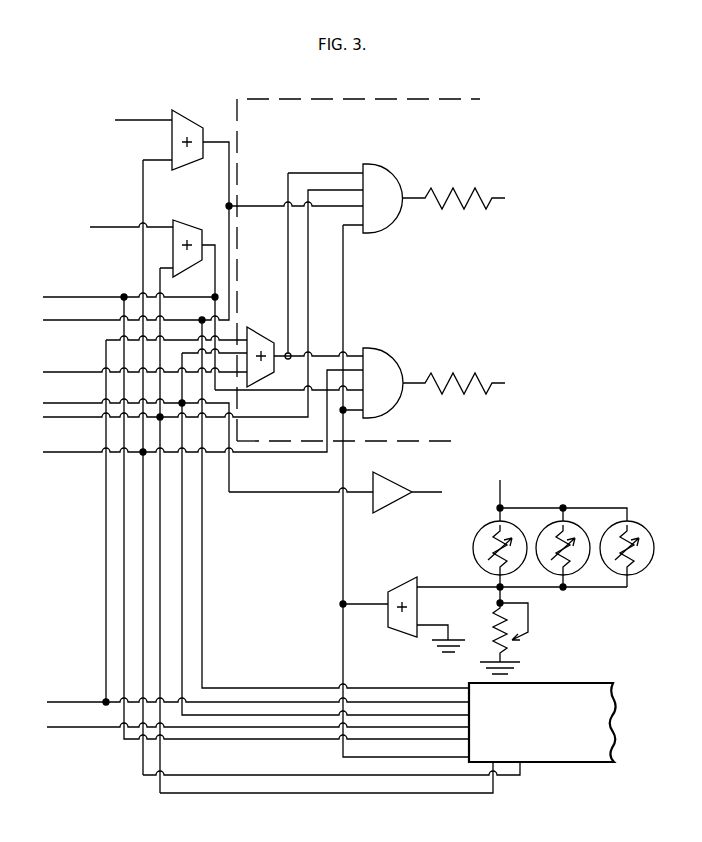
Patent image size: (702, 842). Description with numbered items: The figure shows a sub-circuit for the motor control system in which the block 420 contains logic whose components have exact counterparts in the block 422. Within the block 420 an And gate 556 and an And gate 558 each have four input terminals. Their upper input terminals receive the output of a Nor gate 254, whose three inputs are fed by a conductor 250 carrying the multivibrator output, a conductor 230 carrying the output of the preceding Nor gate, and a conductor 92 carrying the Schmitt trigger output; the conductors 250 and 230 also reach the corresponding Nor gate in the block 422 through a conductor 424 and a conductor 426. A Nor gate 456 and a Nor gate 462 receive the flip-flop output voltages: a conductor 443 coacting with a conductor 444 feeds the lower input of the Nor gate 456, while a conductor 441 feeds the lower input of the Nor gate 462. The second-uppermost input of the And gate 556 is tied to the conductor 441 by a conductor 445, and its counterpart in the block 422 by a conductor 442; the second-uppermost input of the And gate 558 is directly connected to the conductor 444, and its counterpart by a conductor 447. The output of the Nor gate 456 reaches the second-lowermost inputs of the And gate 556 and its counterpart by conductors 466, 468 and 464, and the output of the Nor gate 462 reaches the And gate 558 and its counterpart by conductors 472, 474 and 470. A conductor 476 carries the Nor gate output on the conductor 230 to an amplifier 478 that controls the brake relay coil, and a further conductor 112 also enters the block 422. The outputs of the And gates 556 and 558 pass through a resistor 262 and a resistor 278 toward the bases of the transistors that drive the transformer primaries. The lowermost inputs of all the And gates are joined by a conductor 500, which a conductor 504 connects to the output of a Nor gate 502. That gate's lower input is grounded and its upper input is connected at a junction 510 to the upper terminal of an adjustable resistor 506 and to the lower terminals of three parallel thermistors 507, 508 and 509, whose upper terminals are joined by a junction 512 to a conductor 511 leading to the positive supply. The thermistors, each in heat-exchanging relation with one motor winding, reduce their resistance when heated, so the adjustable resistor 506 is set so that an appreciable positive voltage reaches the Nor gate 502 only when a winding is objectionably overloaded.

The block 420 is at (418, 99).
The Nor gate 456 is at (195, 110).
The conductor 464 is at (217, 140).
The Nor gate 462 is at (189, 220).
The conductor 470 is at (213, 245).
The conductor 443 is at (140, 251).
The conductor 444 is at (158, 268).
The conductor 250 is at (104, 664).
The conductor 92 is at (68, 372).
The conductor 230 is at (78, 403).
The conductor 441 is at (76, 418).
The conductor 445 is at (272, 418).
The conductor 472 is at (266, 392).
The conductor 466 is at (258, 206).
The Nor gate 254 is at (260, 327).
The conductor 500 is at (343, 283).
The And gate 556 is at (380, 166).
The resistor 262 is at (457, 188).
The And gate 558 is at (388, 352).
The resistor 278 is at (457, 373).
The signal line 476 is at (288, 493).
The amplifier 478 is at (412, 470).
The conductor 504 is at (362, 600).
The Nor gate 502 is at (395, 628).
The conductor 511 is at (500, 480).
The junction 512 is at (503, 506).
The thermistor 507 is at (473, 535).
The thermistor 508 is at (578, 524).
The thermistor 509 is at (652, 560).
The junction 510 is at (492, 584).
The adjustable resistor 506 is at (490, 620).
The conductor 426 is at (184, 624).
The conductor 468 is at (203, 652).
The conductor 424 is at (274, 702).
The signal line 112 is at (74, 728).
The conductor 474 is at (244, 740).
The conductor 447 is at (142, 776).
The conductor 442 is at (158, 794).
The block 422 is at (588, 683).